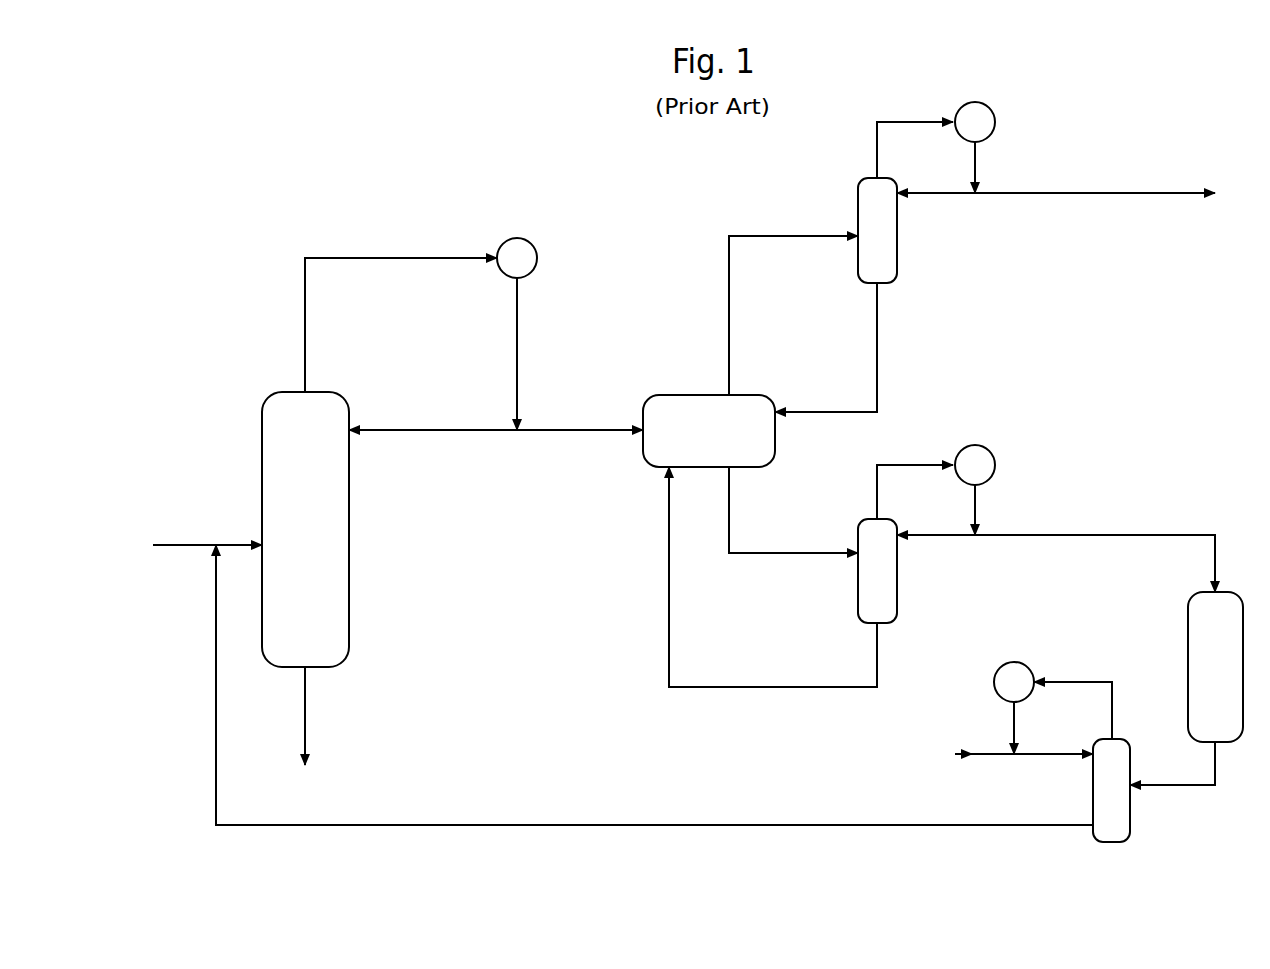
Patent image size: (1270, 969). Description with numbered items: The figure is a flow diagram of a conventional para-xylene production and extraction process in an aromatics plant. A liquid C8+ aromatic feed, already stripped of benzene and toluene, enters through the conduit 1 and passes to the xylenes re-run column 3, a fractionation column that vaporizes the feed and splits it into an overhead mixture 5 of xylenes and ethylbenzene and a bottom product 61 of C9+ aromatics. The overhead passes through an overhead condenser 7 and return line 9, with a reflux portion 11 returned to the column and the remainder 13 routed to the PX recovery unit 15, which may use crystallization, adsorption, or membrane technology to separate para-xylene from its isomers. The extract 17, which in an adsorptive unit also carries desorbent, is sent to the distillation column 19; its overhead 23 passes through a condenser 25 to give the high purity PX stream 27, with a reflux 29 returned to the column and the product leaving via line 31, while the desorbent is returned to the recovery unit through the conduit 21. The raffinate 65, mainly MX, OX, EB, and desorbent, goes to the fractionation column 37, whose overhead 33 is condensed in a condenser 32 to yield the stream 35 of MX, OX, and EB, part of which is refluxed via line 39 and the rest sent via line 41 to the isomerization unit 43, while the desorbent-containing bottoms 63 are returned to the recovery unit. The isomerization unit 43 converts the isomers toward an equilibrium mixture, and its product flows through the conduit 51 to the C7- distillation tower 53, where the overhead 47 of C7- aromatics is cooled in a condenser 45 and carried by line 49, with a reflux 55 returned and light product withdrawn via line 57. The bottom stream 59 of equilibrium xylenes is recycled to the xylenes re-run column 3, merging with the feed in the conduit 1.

The conduit 1 is at (185, 545).
The xylenes re-run column 3 is at (313, 537).
The overhead mixture 5 is at (305, 318).
The condenser/cooler 7 is at (537, 258).
The condensed overhead line 9 is at (517, 333).
The reflux line 11 is at (435, 430).
The reactor feed line 13 is at (555, 430).
The PX recovery unit 15 is at (722, 442).
The extract 17 is at (729, 318).
The distillation column 19 is at (897, 255).
The conduit 21 is at (877, 352).
The separator overhead line 23 is at (877, 146).
The condenser/cooler 25 is at (995, 122).
The high purity PX stream 27 is at (975, 163).
The reflux line 29 is at (950, 193).
The product outlet line 31 is at (1155, 193).
The condenser/cooler 32 is at (995, 465).
The separator overhead line 33 is at (877, 488).
The stream 35 is at (975, 503).
The fractionation column 37 is at (897, 598).
The reflux line 39 is at (950, 535).
The transfer line 41 is at (1155, 535).
The isomerization unit 43 is at (1228, 677).
The condenser/cooler 45 is at (994, 682).
The overhead 47 is at (1085, 682).
The cooled overhead line 49 is at (1014, 720).
The conduit 51 is at (1185, 785).
The C7- distillation tower 53 is at (1130, 825).
The reflux line 55 is at (1048, 754).
The product outlet line 57 is at (990, 754).
The bottom stream 59 is at (473, 825).
The bottom product 61 is at (305, 713).
The bottoms 63 is at (669, 595).
The raffinate 65 is at (755, 553).